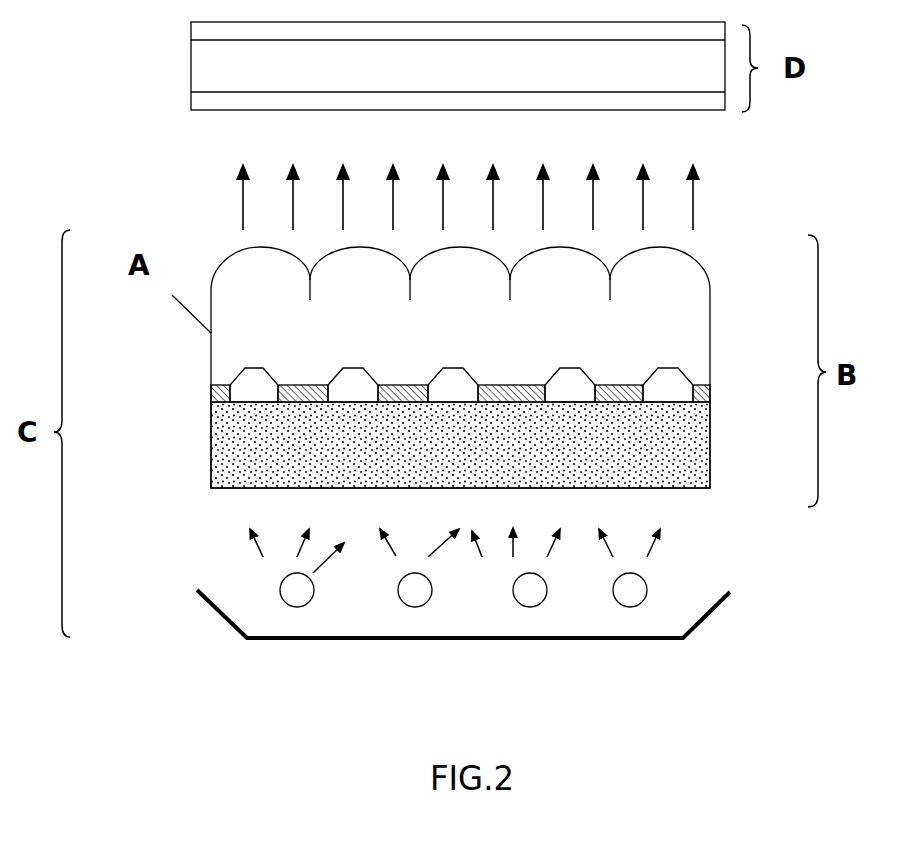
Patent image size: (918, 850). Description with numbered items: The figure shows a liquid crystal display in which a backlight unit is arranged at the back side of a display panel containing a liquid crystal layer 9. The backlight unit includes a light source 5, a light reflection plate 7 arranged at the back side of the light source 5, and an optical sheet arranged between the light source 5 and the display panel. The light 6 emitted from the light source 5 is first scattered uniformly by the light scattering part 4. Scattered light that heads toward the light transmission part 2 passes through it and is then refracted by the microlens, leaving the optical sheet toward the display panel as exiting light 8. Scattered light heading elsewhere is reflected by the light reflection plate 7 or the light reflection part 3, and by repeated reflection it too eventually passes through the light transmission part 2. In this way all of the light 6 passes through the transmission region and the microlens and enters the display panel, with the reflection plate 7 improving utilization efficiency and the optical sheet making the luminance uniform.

The light transmission part 2 is at (243, 385).
The light reflection part 3 is at (640, 386).
The light scattering part 4 is at (693, 438).
The light source 5 is at (535, 607).
The light of a light source 6 is at (677, 540).
The light reflection plate 7 is at (215, 608).
The exiting light 8 is at (242, 195).
The liquid crystal layer 9 is at (208, 75).